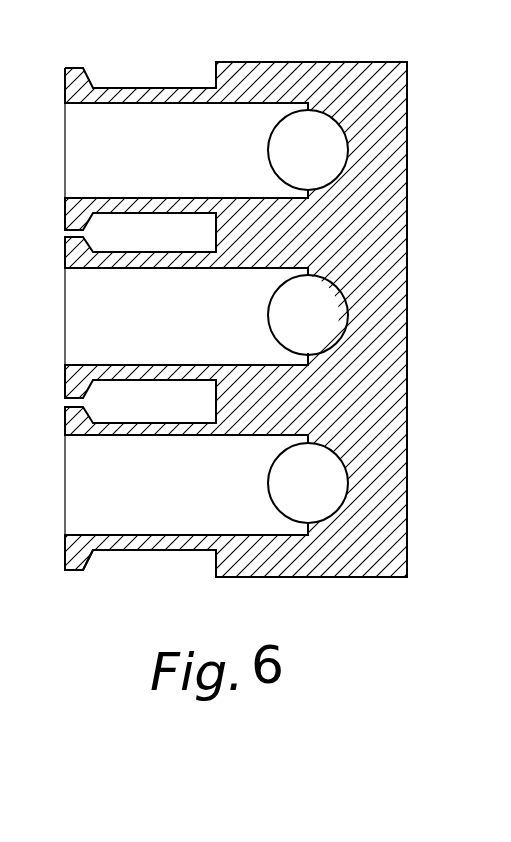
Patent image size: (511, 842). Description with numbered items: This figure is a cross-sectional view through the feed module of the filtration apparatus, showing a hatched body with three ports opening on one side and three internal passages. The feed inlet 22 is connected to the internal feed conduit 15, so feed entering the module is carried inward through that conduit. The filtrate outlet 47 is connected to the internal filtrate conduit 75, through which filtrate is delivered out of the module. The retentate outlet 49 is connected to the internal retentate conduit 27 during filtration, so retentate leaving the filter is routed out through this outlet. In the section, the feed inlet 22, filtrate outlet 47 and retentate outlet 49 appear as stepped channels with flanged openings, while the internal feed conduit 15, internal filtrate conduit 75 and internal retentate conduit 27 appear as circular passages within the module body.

The retentate outlet 49 is at (97, 150).
The filtrate outlet 47 is at (96, 311).
The feed inlet 22 is at (149, 521).
The internal retentate conduit 27 is at (338, 138).
The internal filtrate conduit 75 is at (341, 303).
The internal feed conduit 15 is at (346, 474).